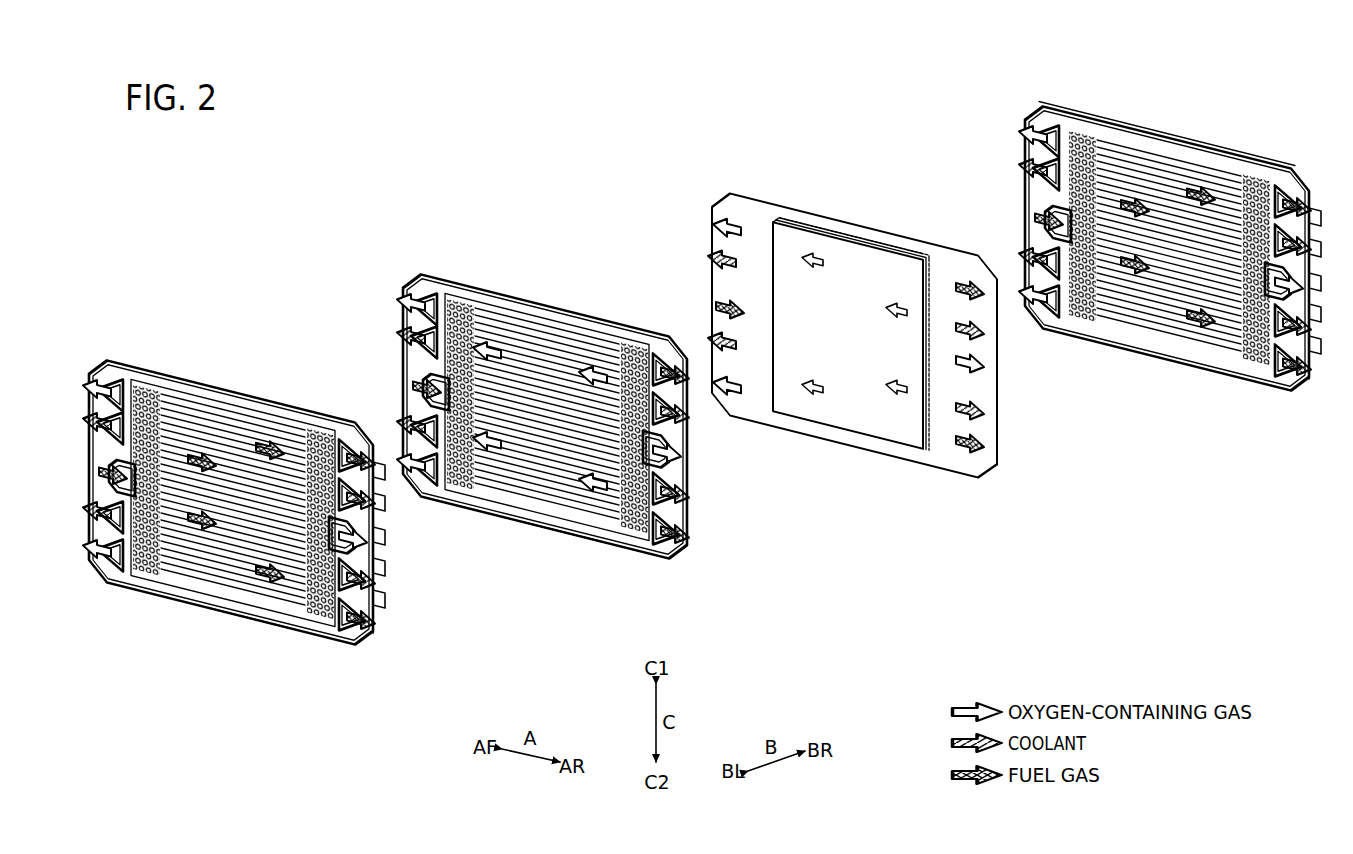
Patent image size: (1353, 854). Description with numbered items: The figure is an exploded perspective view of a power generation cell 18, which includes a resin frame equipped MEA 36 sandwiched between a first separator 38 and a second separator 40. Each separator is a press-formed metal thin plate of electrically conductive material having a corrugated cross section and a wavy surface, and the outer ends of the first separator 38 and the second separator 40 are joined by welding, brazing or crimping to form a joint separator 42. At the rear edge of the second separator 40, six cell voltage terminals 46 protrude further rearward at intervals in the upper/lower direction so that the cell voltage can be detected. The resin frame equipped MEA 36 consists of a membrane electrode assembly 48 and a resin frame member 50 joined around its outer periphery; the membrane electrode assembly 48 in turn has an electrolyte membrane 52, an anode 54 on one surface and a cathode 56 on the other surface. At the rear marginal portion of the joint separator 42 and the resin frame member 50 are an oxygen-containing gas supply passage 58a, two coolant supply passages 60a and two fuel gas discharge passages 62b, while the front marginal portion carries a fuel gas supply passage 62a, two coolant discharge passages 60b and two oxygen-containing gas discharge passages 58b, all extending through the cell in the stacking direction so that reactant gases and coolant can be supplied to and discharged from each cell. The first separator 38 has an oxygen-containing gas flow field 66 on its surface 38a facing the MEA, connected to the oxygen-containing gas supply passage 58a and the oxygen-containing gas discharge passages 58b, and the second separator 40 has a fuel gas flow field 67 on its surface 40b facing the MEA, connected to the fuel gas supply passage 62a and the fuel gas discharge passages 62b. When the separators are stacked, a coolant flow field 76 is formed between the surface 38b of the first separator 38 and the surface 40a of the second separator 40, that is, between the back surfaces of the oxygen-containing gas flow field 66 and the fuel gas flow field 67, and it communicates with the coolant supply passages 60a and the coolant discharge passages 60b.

The power generation cell 18 is at (306, 177).
The resin frame equipped MEA 36 is at (880, 163).
The first separator 38 is at (416, 279).
The surface of the first separator 38a is at (575, 535).
The surface of the first separator 38b is at (540, 524).
The second separator 40 is at (98, 358).
The surface of the second separator 40a is at (265, 625).
The surface of the second separator 40b is at (226, 604).
The joint separator 42 is at (1030, 113).
The cell voltage terminals 46 is at (1308, 200).
The membrane electrode assembly 48 is at (862, 262).
The resin frame member 50 is at (760, 215).
The electrolyte membrane 52 is at (885, 432).
The anode 54 is at (935, 440).
The cathode 56 is at (852, 418).
The oxygen-containing gas supply passage 58a is at (355, 540).
The oxygen-containing gas discharge passages 58b is at (133, 385).
The coolant supply passages 60a is at (355, 500).
The coolant discharge passages 60b is at (112, 426).
The fuel gas supply passage 62a is at (125, 480).
The fuel gas discharge passages 62b is at (351, 460).
The oxygen-containing gas flow field 66 is at (552, 348).
The fuel gas flow field 67 is at (207, 430).
The coolant flow field 76 is at (222, 425).